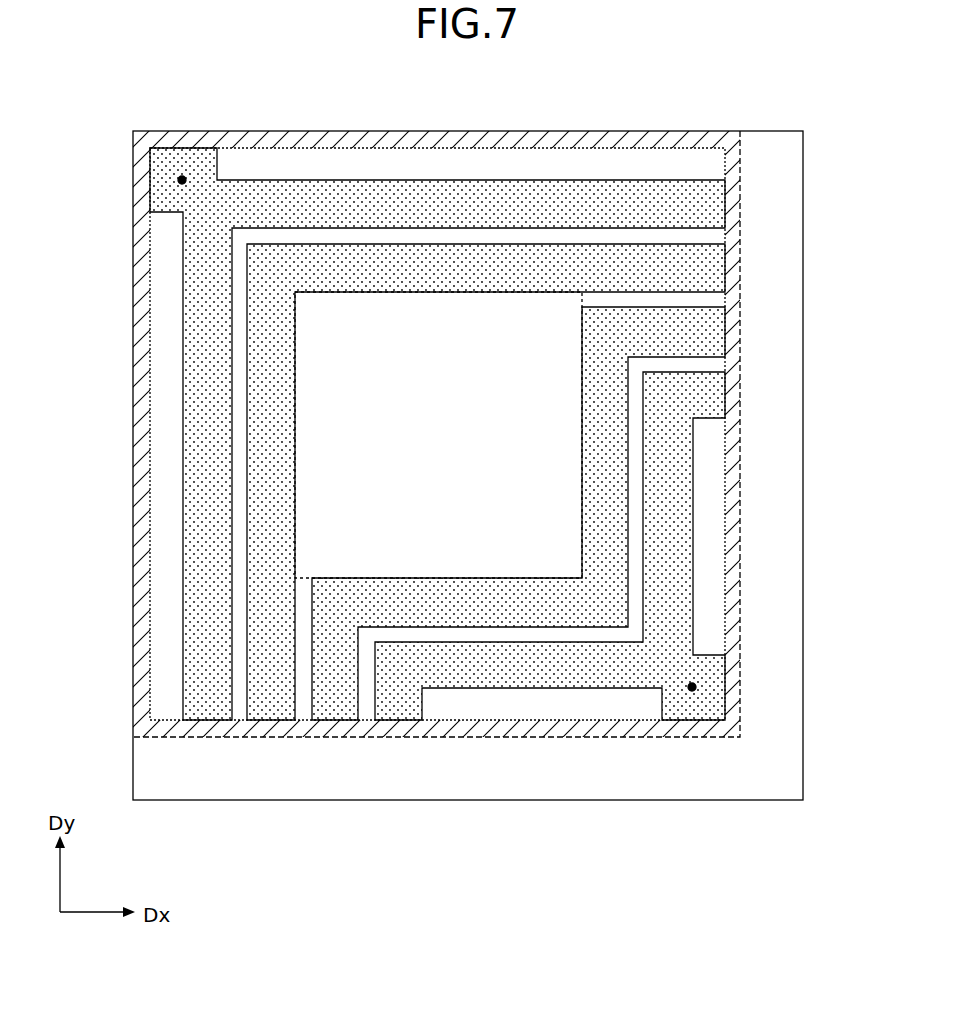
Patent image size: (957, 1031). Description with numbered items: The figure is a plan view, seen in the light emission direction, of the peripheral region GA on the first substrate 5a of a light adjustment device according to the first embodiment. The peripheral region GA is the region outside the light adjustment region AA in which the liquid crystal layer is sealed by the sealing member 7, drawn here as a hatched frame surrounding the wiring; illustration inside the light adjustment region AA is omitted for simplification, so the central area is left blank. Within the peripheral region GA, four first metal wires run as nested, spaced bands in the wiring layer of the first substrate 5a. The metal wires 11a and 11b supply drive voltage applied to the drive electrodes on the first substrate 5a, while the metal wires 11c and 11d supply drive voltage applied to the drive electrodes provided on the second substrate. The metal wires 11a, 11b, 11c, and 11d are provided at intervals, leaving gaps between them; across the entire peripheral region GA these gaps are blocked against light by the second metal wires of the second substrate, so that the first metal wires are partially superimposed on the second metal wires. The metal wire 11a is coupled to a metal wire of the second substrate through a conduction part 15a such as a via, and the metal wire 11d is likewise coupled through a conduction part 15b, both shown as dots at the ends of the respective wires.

The first substrate 5a is at (262, 132).
The sealing member 7 is at (522, 727).
The peripheral region GA is at (634, 148).
The light adjustment region AA is at (548, 376).
The metal wire 11a is at (205, 402).
The metal wire 11b is at (265, 485).
The metal wire 11c is at (605, 497).
The metal wire 11d is at (670, 555).
The conduction part 15a is at (182, 177).
The conduction part 15b is at (697, 687).